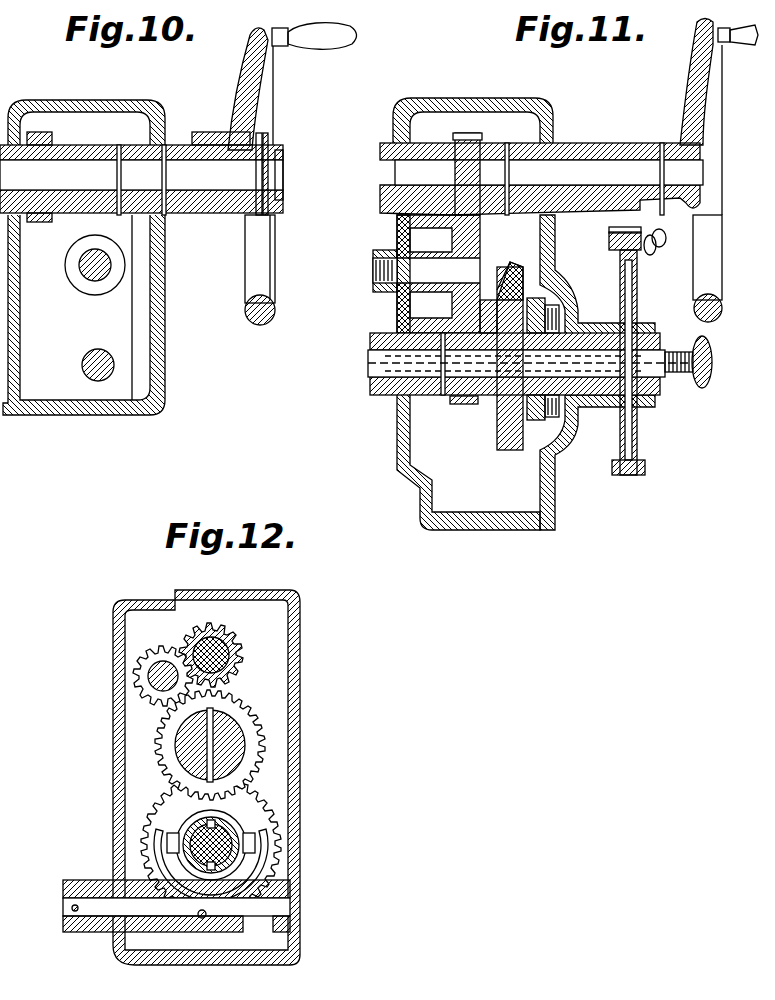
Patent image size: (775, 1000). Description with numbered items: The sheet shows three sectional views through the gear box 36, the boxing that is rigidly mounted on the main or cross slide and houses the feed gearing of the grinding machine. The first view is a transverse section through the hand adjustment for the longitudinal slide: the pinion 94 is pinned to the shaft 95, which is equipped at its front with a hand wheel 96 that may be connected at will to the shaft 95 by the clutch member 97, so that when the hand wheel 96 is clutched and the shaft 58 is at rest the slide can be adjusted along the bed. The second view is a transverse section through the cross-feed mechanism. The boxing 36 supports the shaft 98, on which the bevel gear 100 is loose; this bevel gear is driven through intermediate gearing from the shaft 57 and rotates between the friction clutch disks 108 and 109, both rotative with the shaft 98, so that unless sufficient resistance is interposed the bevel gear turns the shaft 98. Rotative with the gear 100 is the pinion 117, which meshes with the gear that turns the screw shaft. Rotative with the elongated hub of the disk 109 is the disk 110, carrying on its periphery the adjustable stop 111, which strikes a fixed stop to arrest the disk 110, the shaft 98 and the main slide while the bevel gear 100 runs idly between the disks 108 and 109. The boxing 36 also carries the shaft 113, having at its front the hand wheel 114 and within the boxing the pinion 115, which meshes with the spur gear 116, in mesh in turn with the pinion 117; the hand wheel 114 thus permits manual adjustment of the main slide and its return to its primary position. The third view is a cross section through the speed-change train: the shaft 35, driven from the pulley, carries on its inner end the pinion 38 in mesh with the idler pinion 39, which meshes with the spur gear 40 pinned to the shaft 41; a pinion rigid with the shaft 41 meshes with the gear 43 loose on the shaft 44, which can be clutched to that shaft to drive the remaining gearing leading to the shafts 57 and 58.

In FIG. 10, the gear box 36 is at (165, 375).
In FIG. 11, the gear box 36 is at (485, 530).
In FIG. 12, the gear box 36 is at (300, 762).
In FIG. 10, the shaft 57 is at (83, 372).
In FIG. 10, the shaft 58 is at (87, 281).
In FIG. 10, the pinion 94 is at (38, 224).
In FIG. 10, the shaft 95 is at (90, 180).
In FIG. 10, the hand wheel 96 is at (246, 253).
In FIG. 10, the clutch member 97 is at (270, 148).
In FIG. 11, the shaft 98 is at (427, 372).
In FIG. 11, the bevel gear 100 is at (503, 450).
In FIG. 11, the friction clutch disk 108 is at (505, 300).
In FIG. 11, the friction clutch disk 109 is at (552, 302).
In FIG. 11, the disk 110 is at (640, 432).
In FIG. 11, the adjustable stop 111 is at (628, 232).
In FIG. 11, the shaft 113 is at (600, 168).
In FIG. 11, the hand wheel 114 is at (712, 150).
In FIG. 11, the pinion 115 is at (470, 132).
In FIG. 11, the spur gear 116 is at (455, 227).
In FIG. 11, the pinion 117 is at (470, 404).
In FIG. 12, the shaft 35 is at (242, 661).
In FIG. 12, the pinion 38 is at (232, 638).
In FIG. 12, the idler pinion 39 is at (158, 647).
In FIG. 12, the spur gear 40 is at (265, 690).
In FIG. 12, the shaft 41 is at (228, 762).
In FIG. 12, the gear 43 is at (282, 835).
In FIG. 12, the shaft 44 is at (185, 828).